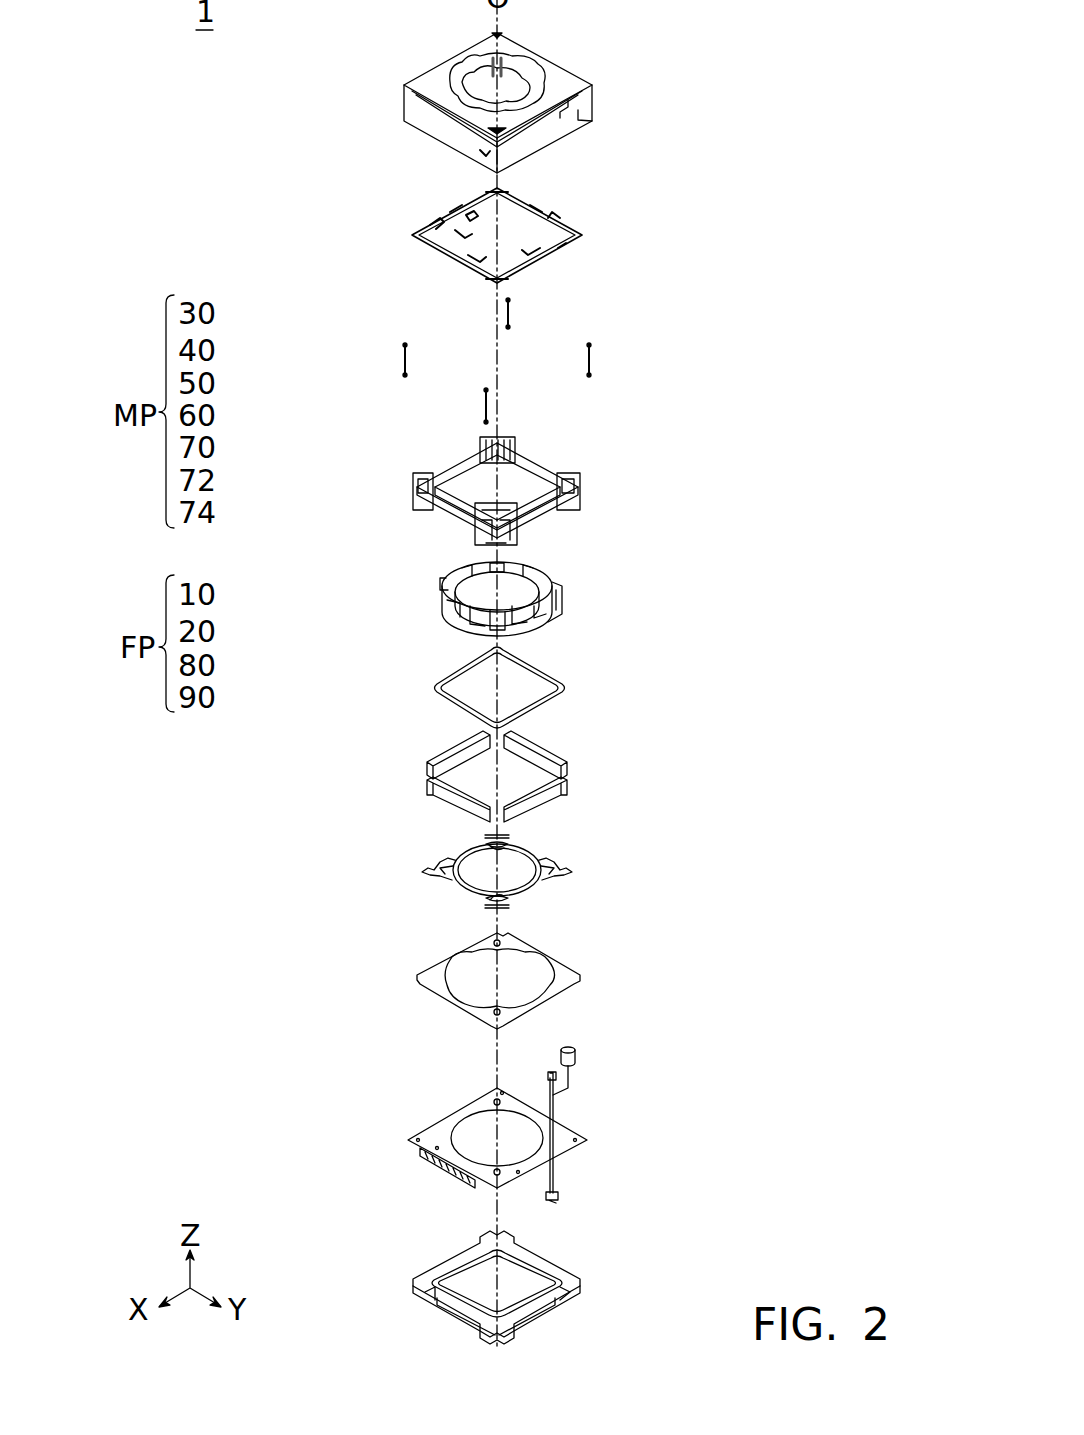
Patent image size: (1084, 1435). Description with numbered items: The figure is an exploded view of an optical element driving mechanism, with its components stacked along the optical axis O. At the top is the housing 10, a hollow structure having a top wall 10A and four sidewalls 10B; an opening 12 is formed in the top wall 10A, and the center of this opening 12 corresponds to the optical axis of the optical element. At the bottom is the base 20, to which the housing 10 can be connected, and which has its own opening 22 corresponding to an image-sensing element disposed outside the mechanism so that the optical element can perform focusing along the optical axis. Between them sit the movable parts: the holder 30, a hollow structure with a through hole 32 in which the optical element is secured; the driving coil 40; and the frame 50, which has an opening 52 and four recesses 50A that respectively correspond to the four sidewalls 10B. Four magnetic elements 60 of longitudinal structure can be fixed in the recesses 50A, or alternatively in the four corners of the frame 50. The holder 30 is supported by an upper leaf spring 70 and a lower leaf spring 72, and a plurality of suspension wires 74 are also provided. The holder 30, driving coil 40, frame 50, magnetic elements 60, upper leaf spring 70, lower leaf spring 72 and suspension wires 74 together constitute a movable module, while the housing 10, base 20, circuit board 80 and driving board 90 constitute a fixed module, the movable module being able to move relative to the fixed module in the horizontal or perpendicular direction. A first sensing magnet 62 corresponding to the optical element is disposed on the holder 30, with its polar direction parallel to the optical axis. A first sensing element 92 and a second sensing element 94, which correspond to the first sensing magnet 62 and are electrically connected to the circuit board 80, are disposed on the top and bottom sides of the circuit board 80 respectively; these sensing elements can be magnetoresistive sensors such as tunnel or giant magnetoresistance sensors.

The housing 10 is at (403, 100).
The top wall 10A is at (445, 78).
The sidewalls 10B is at (445, 133).
The opening 12 is at (530, 72).
The base 20 is at (414, 1282).
The opening 22 is at (470, 1276).
The holder 30 is at (442, 597).
The through hole 32 is at (520, 592).
The driving coil 40 is at (432, 688).
The frame 50 is at (414, 485).
The recesses 50A is at (445, 504).
The opening 52 is at (530, 478).
The magnetic elements 60 is at (446, 798).
The first sensing magnet 62 is at (570, 1048).
The upper leaf spring 70 is at (425, 223).
The lower leaf spring 72 is at (421, 870).
The suspension wires 74 is at (511, 313).
The circuit board 80 is at (409, 1136).
The driving board 90 is at (418, 976).
The first sensing element 92 is at (556, 1202).
The second sensing element 94 is at (552, 1072).